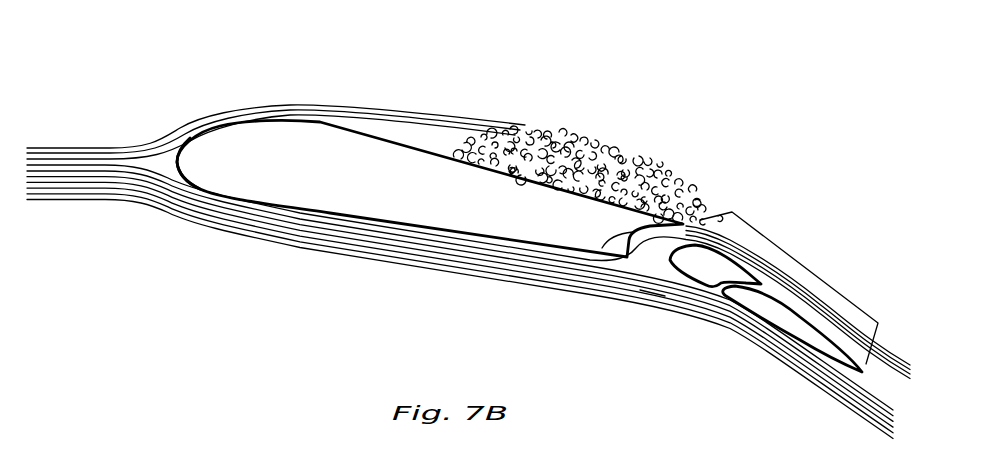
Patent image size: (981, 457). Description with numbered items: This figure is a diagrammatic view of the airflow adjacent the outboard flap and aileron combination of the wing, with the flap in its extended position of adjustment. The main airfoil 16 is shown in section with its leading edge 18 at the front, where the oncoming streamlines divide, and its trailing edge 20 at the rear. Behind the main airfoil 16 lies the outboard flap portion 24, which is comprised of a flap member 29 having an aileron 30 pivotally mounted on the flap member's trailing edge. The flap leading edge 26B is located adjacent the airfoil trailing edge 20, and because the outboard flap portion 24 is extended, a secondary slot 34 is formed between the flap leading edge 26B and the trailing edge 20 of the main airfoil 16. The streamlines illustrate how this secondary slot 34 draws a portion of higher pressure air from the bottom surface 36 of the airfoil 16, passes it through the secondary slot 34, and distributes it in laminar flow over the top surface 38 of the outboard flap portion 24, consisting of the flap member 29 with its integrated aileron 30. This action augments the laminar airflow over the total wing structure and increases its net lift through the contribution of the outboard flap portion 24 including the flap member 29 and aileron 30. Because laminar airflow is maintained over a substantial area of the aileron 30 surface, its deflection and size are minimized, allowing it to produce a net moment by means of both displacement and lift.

The main airfoil 16 is at (342, 143).
The leading edge 18 is at (174, 161).
The bottom surface 36 is at (285, 200).
The trailing edge 20 is at (683, 218).
The outboard flap portion 24 is at (800, 263).
The top surface 38 is at (700, 247).
The aileron 30 is at (755, 335).
The secondary slot 34 is at (578, 291).
The flap leading edge 26B is at (615, 298).
The flap member 29 is at (652, 300).